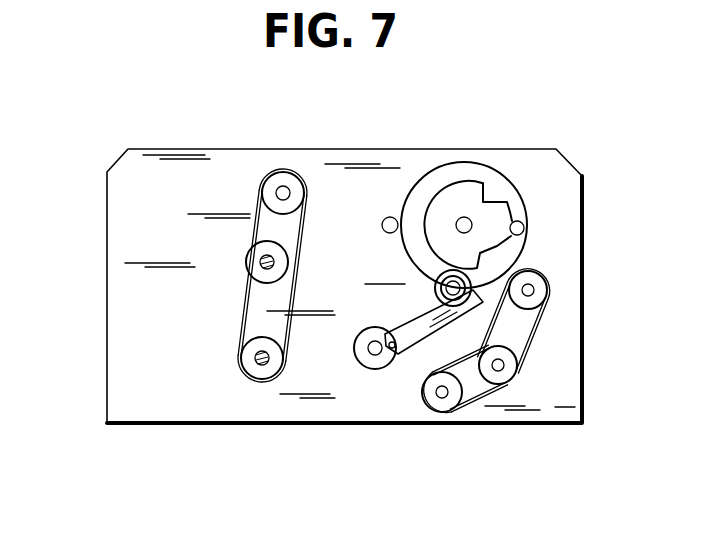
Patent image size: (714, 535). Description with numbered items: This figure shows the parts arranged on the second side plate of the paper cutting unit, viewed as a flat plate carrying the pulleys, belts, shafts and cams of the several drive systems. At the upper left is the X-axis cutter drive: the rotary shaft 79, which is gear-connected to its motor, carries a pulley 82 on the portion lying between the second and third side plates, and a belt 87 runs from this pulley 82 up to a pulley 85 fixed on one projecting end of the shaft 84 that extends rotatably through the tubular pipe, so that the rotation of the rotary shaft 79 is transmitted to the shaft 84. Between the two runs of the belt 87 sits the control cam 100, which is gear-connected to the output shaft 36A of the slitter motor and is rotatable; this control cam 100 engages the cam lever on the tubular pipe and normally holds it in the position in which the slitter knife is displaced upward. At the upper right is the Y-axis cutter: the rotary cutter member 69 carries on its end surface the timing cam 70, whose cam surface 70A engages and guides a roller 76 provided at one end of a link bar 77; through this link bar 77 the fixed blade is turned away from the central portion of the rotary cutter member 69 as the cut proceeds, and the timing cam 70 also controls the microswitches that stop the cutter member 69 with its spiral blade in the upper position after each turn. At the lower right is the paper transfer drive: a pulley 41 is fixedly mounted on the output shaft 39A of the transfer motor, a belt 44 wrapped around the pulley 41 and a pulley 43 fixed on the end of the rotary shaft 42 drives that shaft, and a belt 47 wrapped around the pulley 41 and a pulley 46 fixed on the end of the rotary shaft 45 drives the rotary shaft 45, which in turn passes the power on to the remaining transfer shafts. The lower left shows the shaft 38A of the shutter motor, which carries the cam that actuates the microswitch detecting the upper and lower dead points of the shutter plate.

The output shaft of the motor 36A is at (264, 268).
The shaft of the motor 38A is at (372, 354).
The output shaft of the motor 39A is at (504, 365).
The pulley 41 is at (506, 382).
The rotary shaft 42 is at (534, 290).
The pulley 43 is at (536, 302).
The belt 44 is at (522, 335).
The rotary shaft 45 is at (442, 399).
The pulley 46 is at (458, 408).
The belt 47 is at (445, 360).
The rotary cutter member 69 is at (464, 217).
The timing cam 70 is at (445, 200).
The cam surface 70A is at (524, 229).
The roller 76 is at (470, 283).
The link bar 77 is at (403, 352).
The rotary shaft 79 is at (255, 360).
The pulley 82 is at (241, 358).
The shaft 84 is at (287, 189).
The pulley 85 is at (265, 172).
The belt 87 is at (252, 293).
The control cam 100 is at (246, 260).